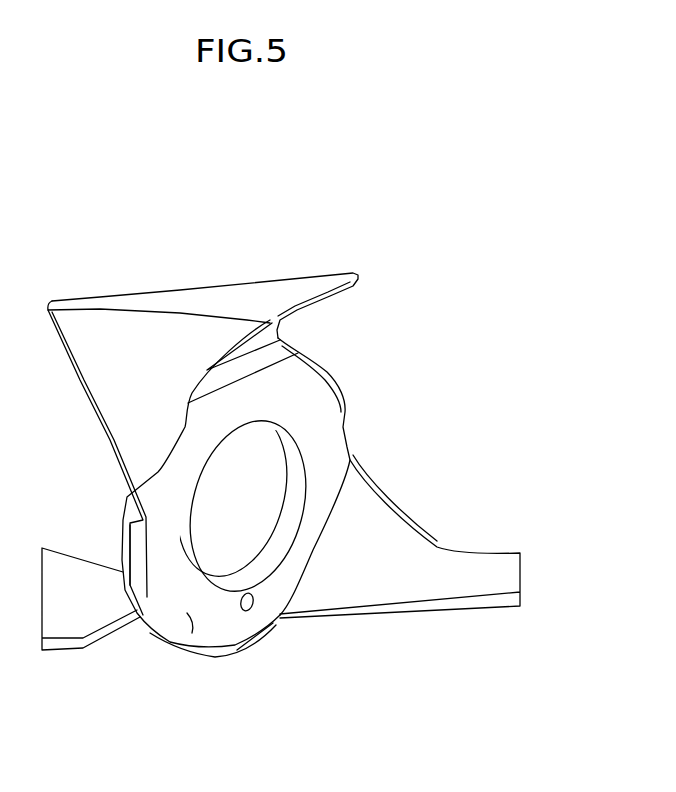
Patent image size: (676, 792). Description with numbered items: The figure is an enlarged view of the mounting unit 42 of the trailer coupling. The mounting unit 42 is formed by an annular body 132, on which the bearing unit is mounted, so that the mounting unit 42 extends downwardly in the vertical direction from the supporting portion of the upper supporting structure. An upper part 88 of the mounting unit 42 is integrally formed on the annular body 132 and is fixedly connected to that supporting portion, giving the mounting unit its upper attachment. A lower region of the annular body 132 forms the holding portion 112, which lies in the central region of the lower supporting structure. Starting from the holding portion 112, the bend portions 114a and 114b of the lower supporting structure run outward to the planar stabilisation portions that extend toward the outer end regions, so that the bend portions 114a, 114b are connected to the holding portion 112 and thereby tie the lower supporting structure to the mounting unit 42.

The upper part 88 is at (144, 330).
The mounting unit 42 is at (377, 395).
The bend portion 114a is at (77, 603).
The bend portion 114b is at (380, 550).
The holding portion 112 is at (192, 633).
The annular body 132 is at (237, 660).